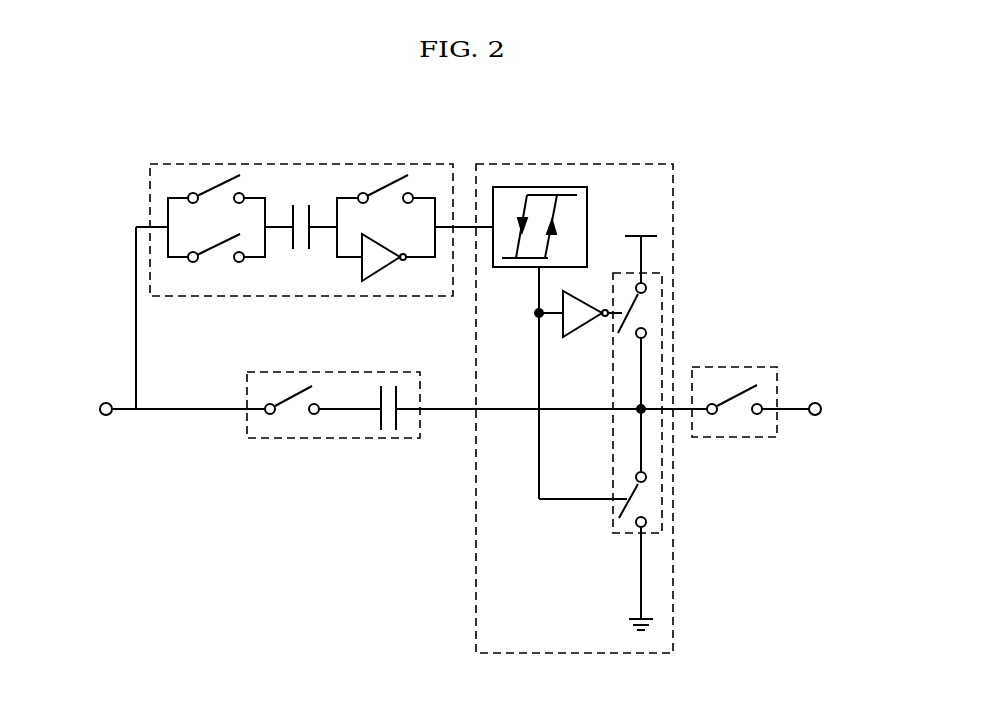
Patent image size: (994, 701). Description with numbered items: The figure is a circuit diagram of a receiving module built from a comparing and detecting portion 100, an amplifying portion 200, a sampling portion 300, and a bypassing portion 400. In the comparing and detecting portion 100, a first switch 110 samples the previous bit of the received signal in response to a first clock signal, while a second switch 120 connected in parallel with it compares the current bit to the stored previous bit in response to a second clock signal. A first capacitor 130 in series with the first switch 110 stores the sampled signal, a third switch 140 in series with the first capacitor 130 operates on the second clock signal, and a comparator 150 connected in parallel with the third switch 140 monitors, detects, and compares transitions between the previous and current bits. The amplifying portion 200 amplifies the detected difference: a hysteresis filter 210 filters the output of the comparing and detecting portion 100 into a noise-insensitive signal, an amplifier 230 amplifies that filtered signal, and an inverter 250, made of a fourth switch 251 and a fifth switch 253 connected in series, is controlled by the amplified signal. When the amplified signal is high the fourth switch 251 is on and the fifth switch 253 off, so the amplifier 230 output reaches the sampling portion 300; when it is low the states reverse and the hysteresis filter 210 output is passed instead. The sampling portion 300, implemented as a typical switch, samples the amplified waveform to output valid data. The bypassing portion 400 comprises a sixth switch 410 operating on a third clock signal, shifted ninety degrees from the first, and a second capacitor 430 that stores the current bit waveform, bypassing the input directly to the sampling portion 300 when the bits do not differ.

The comparing and detecting portion 100 is at (300, 164).
The first switch 110 is at (213, 187).
The second switch 120 is at (220, 248).
The first capacitor 130 is at (302, 252).
The third switch 140 is at (385, 187).
The comparator 150 is at (388, 280).
The amplifying portion 200 is at (573, 164).
The hysteresis filter 210 is at (518, 187).
The amplifier 230 is at (560, 328).
The inverter 250 is at (660, 273).
The fourth switch 251 is at (637, 316).
The fifth switch 253 is at (637, 493).
The sampling portion 300 is at (732, 437).
The bypassing portion 400 is at (333, 439).
The sixth switch 410 is at (295, 397).
The second capacitor 430 is at (387, 432).